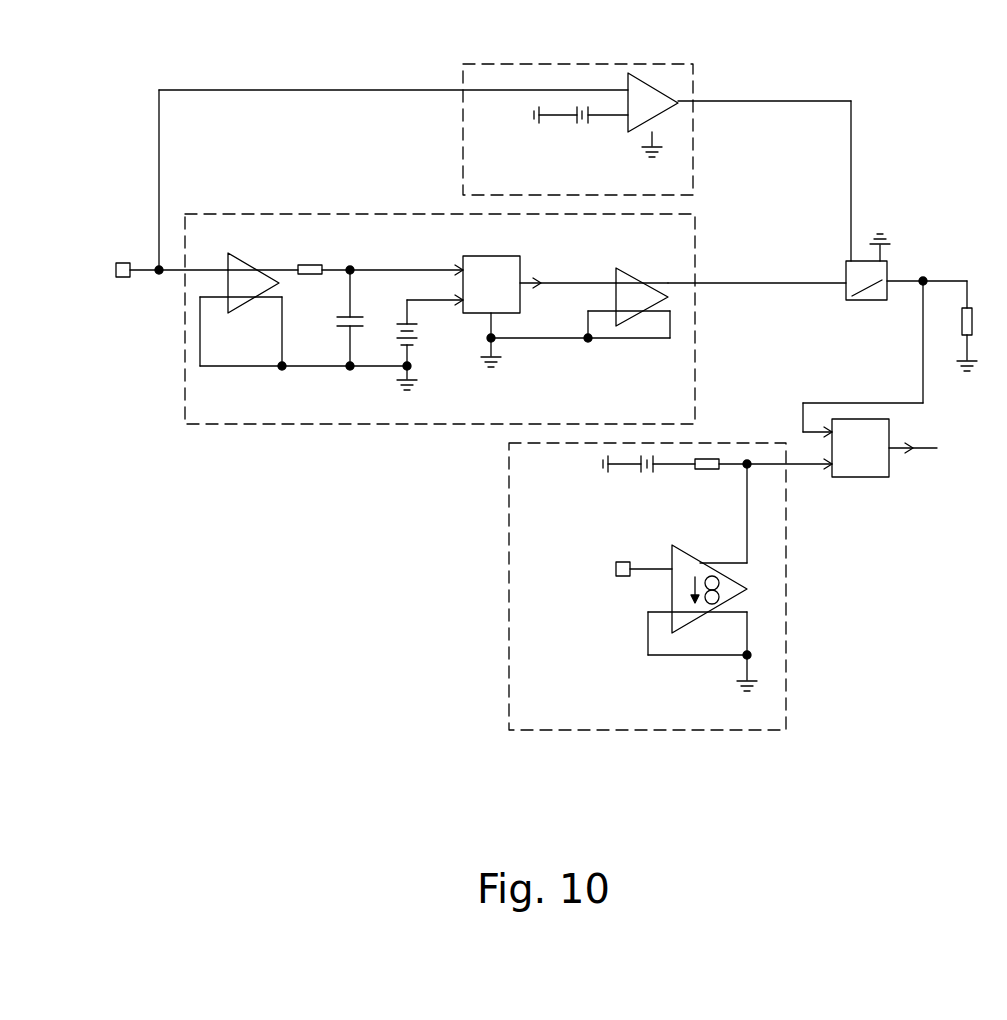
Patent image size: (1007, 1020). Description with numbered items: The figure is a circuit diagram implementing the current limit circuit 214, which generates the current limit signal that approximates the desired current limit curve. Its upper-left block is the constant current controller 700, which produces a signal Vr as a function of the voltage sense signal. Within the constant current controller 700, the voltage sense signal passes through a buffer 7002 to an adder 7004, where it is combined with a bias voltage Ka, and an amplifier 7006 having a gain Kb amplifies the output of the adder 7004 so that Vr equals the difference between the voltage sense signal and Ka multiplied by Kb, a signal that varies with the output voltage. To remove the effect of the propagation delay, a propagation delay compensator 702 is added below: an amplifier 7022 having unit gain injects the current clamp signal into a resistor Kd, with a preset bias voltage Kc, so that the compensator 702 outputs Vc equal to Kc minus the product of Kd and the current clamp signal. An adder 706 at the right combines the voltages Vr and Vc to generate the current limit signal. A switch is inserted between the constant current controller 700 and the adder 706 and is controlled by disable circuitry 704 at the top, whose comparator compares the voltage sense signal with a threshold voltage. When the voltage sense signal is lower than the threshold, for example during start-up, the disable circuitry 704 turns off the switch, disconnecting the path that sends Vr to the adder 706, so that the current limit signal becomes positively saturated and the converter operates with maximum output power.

The current limit circuit 214 is at (938, 100).
The constant current controller 700 is at (382, 212).
The buffer 7002 is at (250, 258).
The adder 7004 is at (493, 256).
The amplifier 7006 is at (633, 268).
The disable circuitry 704 is at (693, 150).
The adder 706 is at (860, 477).
The propagation delay compensator 702 is at (509, 578).
The amplifier 7022 is at (693, 556).